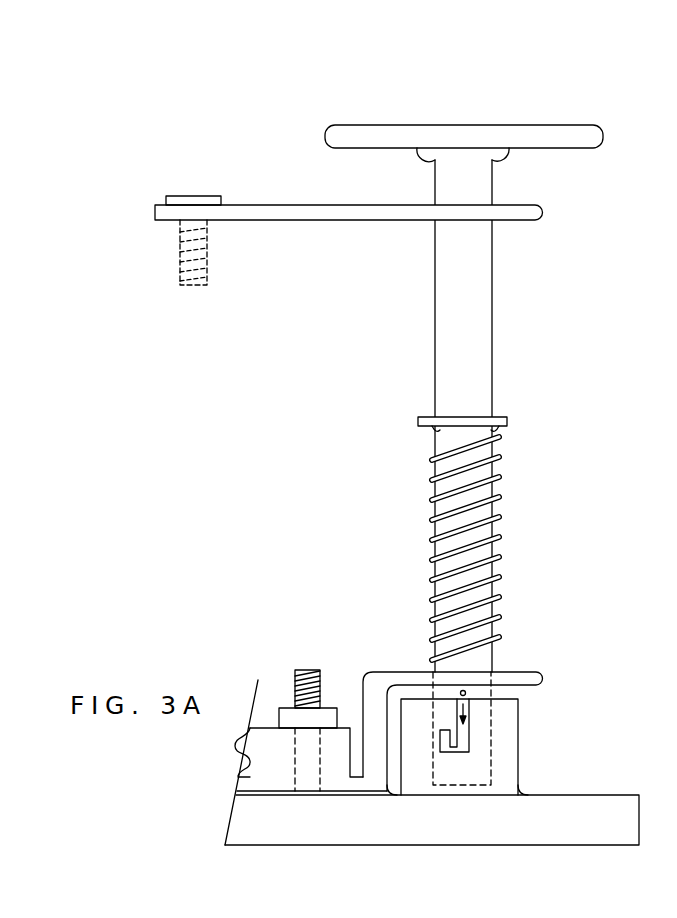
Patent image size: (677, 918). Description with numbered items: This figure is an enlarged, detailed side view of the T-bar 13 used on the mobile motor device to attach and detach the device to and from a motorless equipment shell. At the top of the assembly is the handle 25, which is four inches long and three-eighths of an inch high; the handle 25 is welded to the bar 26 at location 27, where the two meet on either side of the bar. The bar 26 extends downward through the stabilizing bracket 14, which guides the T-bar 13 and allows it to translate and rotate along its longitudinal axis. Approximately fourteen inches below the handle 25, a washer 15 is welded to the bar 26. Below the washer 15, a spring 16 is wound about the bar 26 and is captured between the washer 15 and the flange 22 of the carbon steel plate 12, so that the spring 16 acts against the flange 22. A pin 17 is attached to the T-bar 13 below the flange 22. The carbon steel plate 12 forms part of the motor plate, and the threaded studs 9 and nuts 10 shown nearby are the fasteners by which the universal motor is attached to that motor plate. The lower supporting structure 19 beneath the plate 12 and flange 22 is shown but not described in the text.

The threaded stud 9 is at (313, 665).
The nut 10 is at (327, 708).
The carbon steel plate 12 is at (255, 783).
The T-bar 13 is at (492, 118).
The stabilizing bracket 14 is at (330, 215).
The washer 15 is at (420, 425).
The spring 16 is at (497, 518).
The pin 17 is at (465, 690).
The base 19 is at (503, 773).
The flange 22 is at (523, 680).
The handle 25 is at (453, 140).
The bar 26 is at (470, 357).
The weld location 27 is at (432, 160).